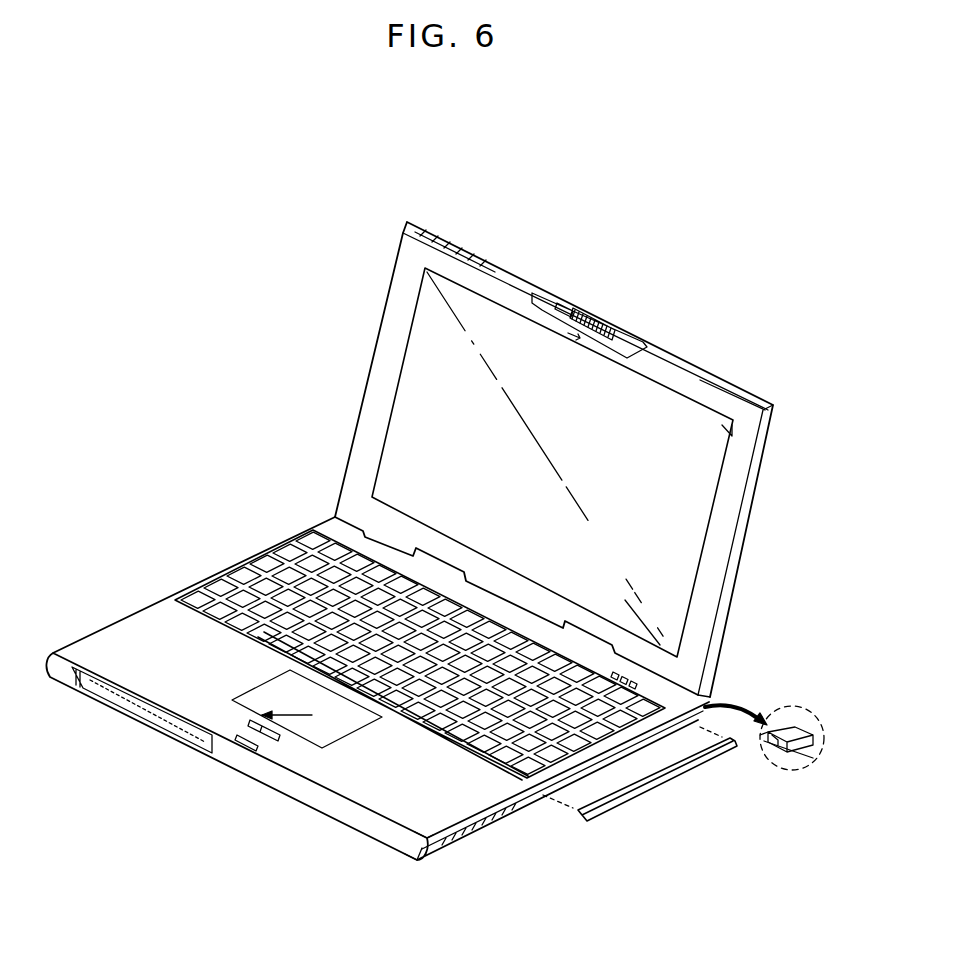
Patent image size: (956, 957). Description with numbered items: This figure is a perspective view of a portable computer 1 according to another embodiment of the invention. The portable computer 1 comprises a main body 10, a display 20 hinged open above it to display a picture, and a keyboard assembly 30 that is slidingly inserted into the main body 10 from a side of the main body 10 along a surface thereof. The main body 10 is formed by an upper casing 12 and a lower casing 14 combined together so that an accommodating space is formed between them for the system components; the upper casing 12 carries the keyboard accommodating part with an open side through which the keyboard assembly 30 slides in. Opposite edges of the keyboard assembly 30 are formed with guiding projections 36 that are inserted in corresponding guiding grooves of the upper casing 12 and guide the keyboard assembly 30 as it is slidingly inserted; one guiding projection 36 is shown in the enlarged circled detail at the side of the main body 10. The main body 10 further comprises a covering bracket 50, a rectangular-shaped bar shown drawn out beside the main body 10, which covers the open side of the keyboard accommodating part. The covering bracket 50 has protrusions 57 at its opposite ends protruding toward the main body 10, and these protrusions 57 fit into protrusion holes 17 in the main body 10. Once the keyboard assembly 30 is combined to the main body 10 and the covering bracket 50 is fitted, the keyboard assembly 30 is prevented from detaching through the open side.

The portable computer 1 is at (214, 357).
The main body 10 is at (118, 613).
The upper casing 12 is at (432, 843).
The lower casing 14 is at (417, 863).
The protrusion hole 17 is at (790, 728).
The display 20 is at (764, 521).
The keyboard assembly 30 is at (213, 578).
The guiding projection 36 is at (777, 728).
The covering bracket 50 is at (655, 791).
The protrusion 57 is at (578, 813).